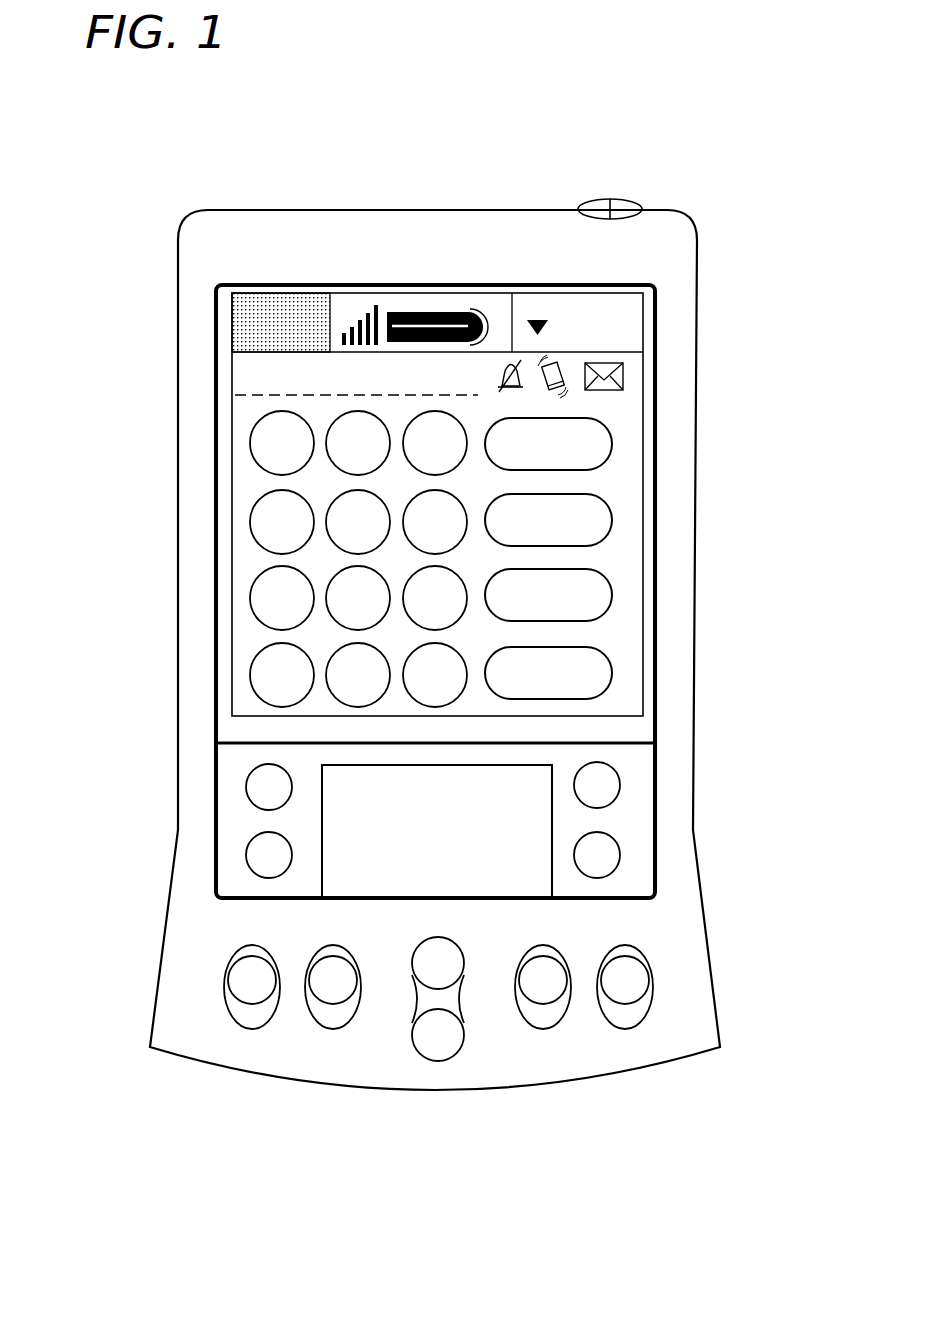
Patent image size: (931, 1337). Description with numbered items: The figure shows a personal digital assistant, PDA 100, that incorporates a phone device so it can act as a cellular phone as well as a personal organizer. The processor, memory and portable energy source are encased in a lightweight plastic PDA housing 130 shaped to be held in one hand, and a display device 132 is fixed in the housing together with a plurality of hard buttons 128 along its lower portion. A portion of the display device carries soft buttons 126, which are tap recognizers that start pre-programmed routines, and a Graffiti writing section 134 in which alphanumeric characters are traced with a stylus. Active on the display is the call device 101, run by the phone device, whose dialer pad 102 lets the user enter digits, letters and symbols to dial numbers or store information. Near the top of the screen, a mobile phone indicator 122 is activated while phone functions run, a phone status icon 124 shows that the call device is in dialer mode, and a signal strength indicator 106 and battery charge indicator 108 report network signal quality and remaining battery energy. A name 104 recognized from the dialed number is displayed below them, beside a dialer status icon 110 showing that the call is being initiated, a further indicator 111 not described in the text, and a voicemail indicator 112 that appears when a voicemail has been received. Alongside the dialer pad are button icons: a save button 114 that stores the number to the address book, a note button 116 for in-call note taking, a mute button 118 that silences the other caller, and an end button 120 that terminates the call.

The PDA 100 is at (247, 182).
The call device 101 is at (230, 635).
The dialer pad 102 is at (257, 480).
The name 104 is at (247, 372).
The signal strength indicator 106 is at (363, 315).
The battery charge indicator 108 is at (448, 313).
The dialer status icon 110 is at (512, 358).
The vibrate mode icon 111 is at (558, 362).
The voicemail indicator 112 is at (627, 378).
The save button 114 is at (612, 447).
The note button 116 is at (612, 525).
The mute button 118 is at (612, 598).
The end button 120 is at (612, 677).
The mobile phone indicator 122 is at (235, 313).
The phone status icon 124 is at (613, 310).
The soft buttons 126 is at (610, 785).
The hard buttons 128 is at (635, 975).
The PDA housing 130 is at (167, 935).
The display device 132 is at (205, 543).
The Graffiti writing section 134 is at (461, 833).